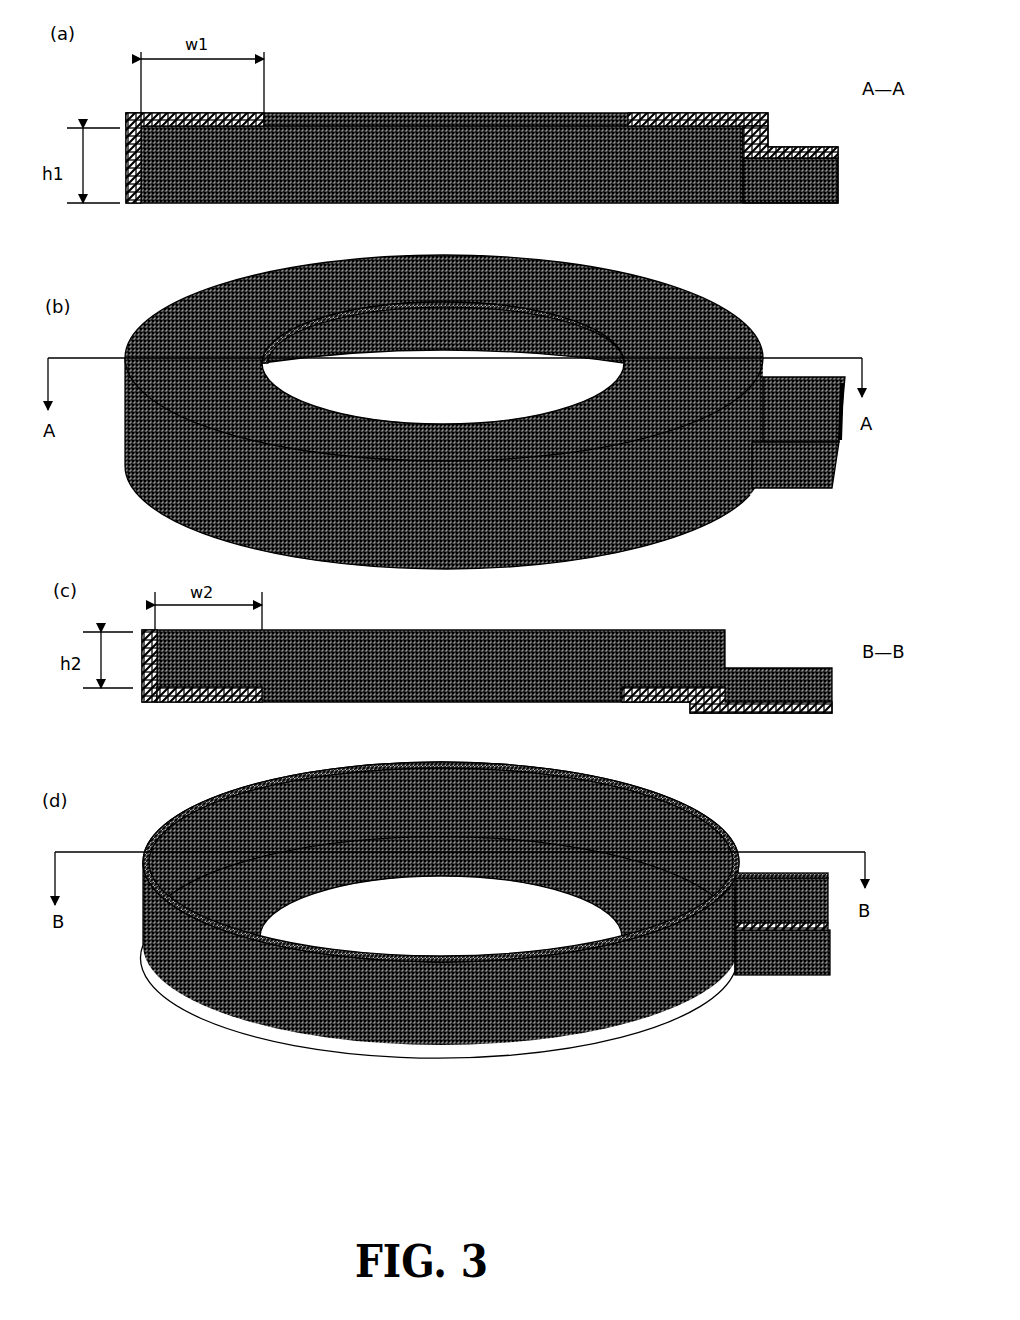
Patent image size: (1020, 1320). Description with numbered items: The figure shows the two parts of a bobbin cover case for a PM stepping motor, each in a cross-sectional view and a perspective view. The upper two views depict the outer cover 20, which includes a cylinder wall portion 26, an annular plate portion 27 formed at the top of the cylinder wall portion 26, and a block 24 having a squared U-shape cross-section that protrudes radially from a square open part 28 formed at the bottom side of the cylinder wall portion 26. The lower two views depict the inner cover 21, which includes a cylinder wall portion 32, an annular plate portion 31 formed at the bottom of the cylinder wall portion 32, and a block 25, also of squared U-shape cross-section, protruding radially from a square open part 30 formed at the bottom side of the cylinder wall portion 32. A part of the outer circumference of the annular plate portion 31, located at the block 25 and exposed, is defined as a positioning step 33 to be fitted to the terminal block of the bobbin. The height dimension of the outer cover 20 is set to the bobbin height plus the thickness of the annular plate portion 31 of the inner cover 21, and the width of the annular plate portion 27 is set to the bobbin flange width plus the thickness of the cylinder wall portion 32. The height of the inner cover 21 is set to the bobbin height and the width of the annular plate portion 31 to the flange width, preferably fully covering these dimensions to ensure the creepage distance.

The outer cover 20 is at (767, 92).
The inner cover 21 is at (753, 622).
The block 24 is at (775, 145).
The block 25 is at (775, 718).
The cylinder wall portion 26 is at (140, 173).
The annular plate portion 27 is at (183, 112).
The square open part 28 is at (743, 183).
The square open part 30 is at (772, 903).
The annular plate portion 31 is at (183, 702).
The cylinder wall portion 32 is at (140, 667).
The positioning step 33 is at (725, 697).